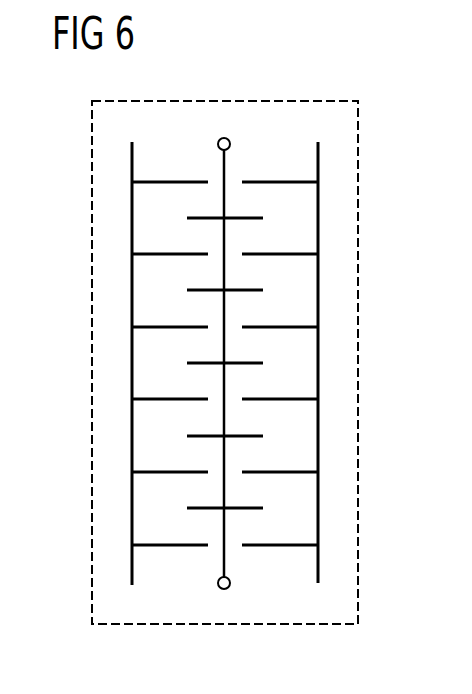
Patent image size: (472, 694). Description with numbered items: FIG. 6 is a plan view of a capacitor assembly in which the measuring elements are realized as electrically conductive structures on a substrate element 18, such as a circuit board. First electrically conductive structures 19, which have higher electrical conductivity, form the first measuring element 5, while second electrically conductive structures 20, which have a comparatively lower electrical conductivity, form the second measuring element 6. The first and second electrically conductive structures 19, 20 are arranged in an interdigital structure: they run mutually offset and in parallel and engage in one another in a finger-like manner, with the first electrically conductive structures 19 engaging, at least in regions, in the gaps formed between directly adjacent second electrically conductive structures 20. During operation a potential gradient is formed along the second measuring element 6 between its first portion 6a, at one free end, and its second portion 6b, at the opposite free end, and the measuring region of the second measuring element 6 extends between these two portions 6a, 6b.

The first measuring element 5 is at (122, 198).
The second measuring element 6 is at (237, 272).
The first portion of the second measuring element 6a is at (224, 138).
The second portion of the second measuring element 6b is at (224, 589).
The substrate element 18 is at (358, 555).
The first electrically conductive structures 19 is at (132, 498).
The second electrically conductive structures 20 is at (224, 419).